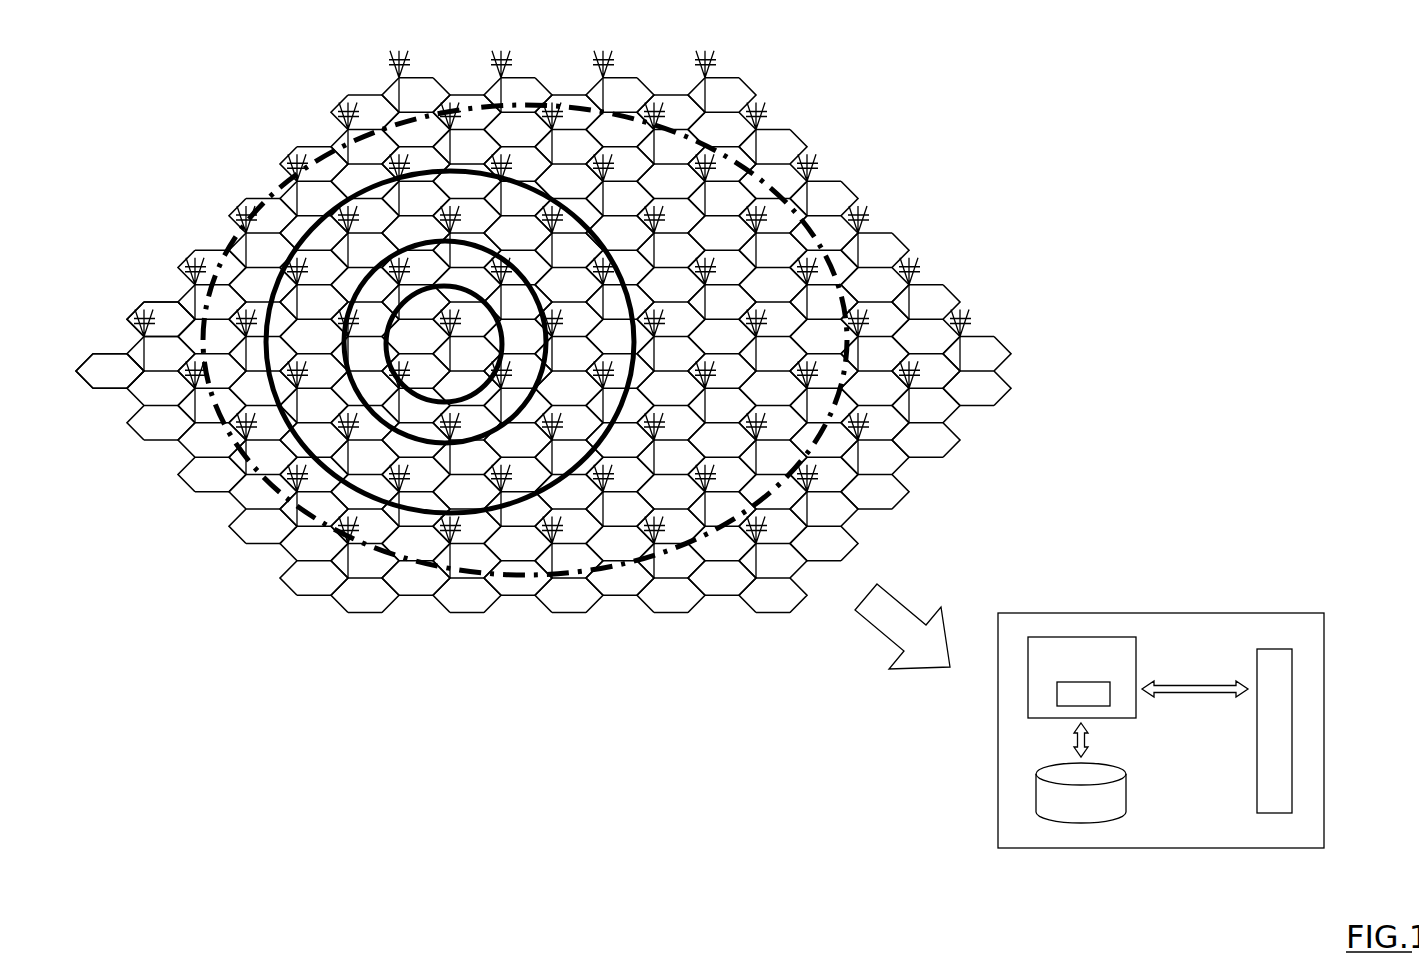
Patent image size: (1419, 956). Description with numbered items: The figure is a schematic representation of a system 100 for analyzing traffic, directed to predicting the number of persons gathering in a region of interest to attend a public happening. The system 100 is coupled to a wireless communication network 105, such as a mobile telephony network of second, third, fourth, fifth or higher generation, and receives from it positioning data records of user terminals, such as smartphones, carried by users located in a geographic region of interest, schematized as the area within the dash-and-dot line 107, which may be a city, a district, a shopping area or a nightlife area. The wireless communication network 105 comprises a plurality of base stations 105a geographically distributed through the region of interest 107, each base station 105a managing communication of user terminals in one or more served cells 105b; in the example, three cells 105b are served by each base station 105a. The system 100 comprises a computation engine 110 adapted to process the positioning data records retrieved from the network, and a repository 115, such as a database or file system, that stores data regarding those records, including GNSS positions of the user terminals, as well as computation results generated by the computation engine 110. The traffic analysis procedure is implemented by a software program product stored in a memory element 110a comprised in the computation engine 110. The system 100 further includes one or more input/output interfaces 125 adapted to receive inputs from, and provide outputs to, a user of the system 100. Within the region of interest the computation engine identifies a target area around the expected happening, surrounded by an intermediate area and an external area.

The system 100 is at (1248, 574).
The wireless communication network 105 is at (256, 631).
The base station 105a is at (147, 305).
The cell 105b is at (108, 352).
The region of interest 107 is at (814, 232).
The computation engine 110 is at (1028, 706).
The memory element 110a is at (1082, 682).
The repository 115 is at (1080, 824).
The input/output interface 125 is at (1292, 730).